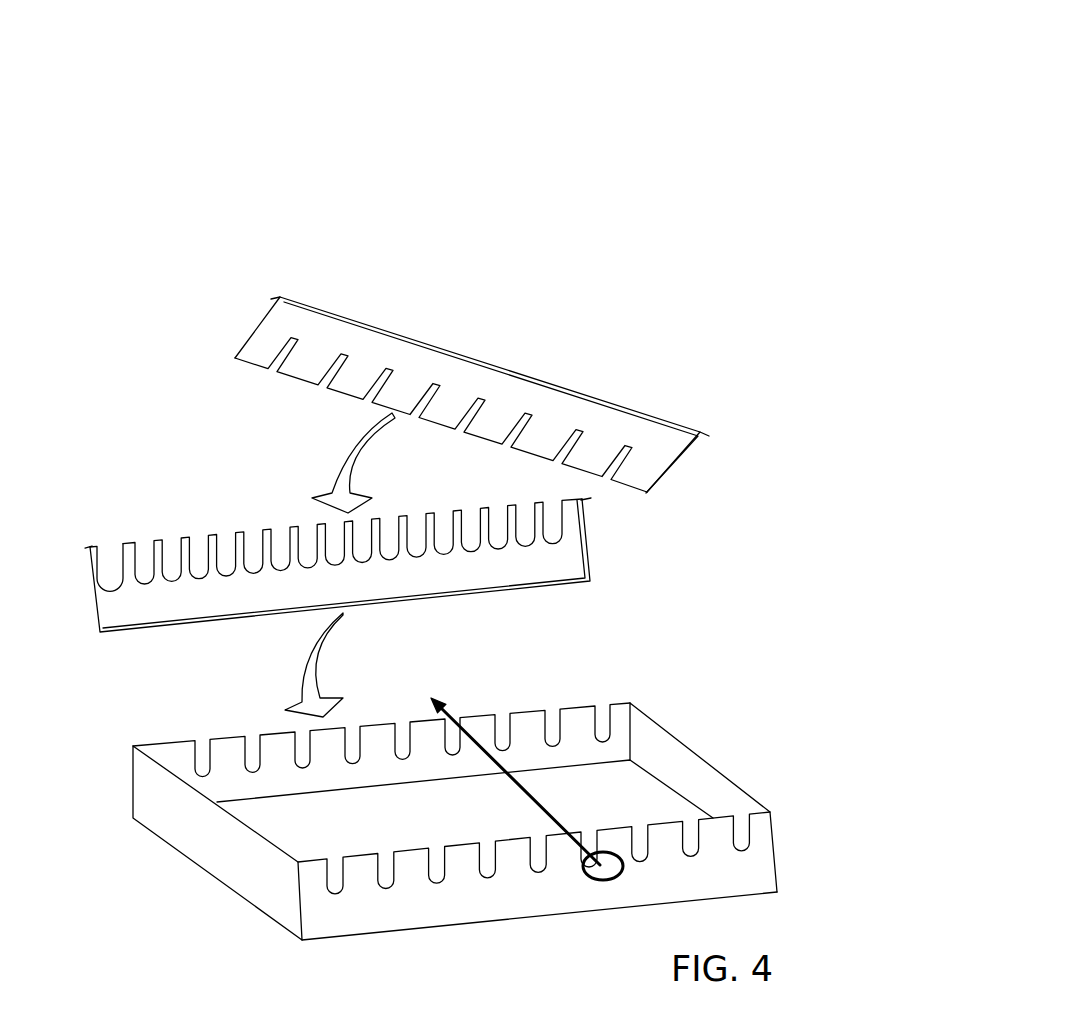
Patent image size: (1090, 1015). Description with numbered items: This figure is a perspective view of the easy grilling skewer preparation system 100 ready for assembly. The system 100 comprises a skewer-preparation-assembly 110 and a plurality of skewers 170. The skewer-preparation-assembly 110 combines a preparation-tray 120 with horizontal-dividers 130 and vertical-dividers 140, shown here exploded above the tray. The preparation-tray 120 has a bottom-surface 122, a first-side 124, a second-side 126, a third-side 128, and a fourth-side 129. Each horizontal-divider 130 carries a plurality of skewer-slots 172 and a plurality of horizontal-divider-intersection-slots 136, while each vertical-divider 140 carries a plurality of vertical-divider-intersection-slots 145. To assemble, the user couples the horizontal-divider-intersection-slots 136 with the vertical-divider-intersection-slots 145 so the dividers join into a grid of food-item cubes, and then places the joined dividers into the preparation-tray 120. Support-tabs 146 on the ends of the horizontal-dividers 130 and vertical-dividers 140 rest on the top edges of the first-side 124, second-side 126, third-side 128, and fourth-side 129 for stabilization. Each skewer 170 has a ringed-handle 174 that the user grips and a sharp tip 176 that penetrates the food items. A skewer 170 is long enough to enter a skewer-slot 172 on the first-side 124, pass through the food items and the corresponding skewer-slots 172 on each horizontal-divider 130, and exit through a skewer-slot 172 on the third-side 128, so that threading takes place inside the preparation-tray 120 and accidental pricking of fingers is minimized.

The easy grilling skewer preparation system 100 is at (702, 80).
The skewer-preparation-assembly 110 is at (697, 140).
The preparation-tray 120 is at (677, 733).
The bottom-surface 122 is at (280, 815).
The first-side 124 is at (455, 908).
The second-side 126 is at (198, 823).
The third-side 128 is at (575, 723).
The fourth-side 129 is at (647, 743).
The horizontal-divider 130 is at (592, 568).
The horizontal-divider-intersection-slot 136 is at (240, 540).
The vertical-divider 140 is at (393, 323).
The vertical-divider-intersection-slot 145 is at (322, 383).
The support-tab 146 is at (279, 293).
The skewer 170 is at (472, 733).
The skewer-slot 172 is at (165, 552).
The ringed-handle 174 is at (600, 880).
The sharp tip 176 is at (438, 690).